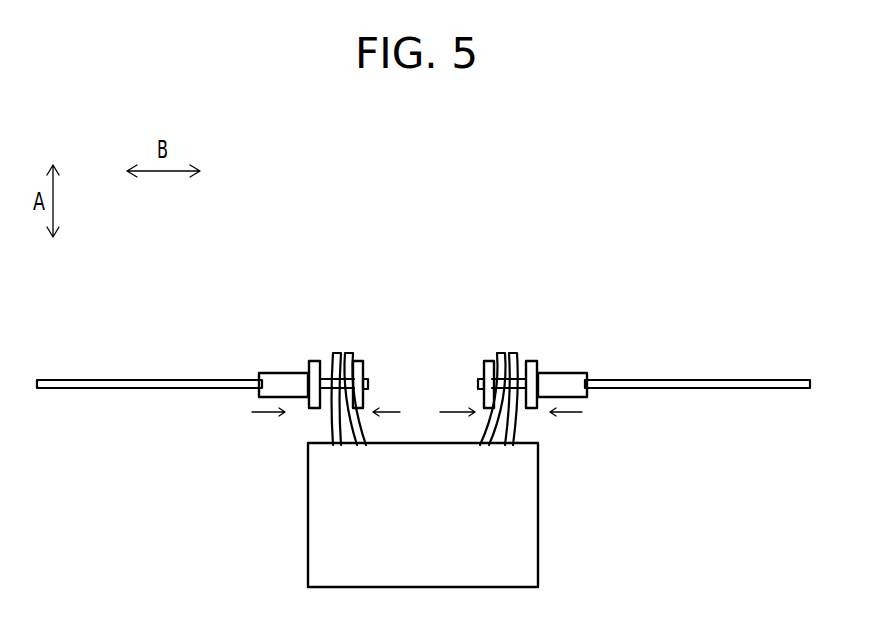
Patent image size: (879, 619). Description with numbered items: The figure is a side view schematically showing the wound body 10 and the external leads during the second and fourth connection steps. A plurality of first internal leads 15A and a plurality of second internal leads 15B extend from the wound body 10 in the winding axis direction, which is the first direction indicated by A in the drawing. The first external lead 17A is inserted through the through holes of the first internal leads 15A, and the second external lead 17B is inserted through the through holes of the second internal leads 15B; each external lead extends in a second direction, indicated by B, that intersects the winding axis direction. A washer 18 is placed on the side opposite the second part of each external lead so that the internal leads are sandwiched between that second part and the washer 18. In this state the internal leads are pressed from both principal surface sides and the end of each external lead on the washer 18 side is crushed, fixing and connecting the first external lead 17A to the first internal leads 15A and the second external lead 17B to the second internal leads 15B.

The base body 10 is at (517, 518).
The first internal lead 15A is at (343, 353).
The second internal lead 15B is at (510, 353).
The first external lead 17A is at (295, 300).
The second external lead 17B is at (757, 300).
The washer 18 is at (485, 372).